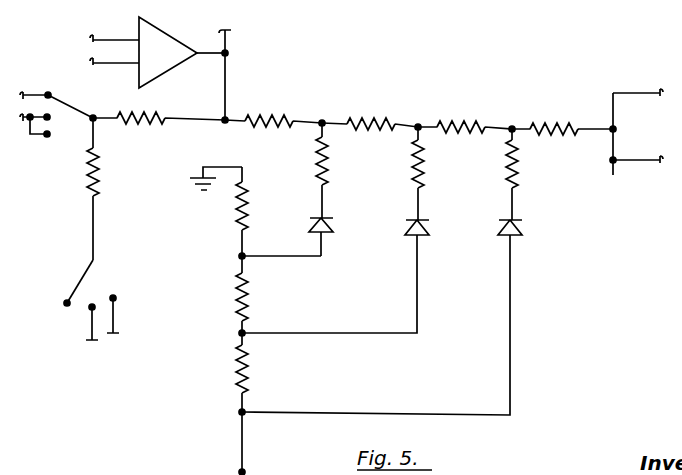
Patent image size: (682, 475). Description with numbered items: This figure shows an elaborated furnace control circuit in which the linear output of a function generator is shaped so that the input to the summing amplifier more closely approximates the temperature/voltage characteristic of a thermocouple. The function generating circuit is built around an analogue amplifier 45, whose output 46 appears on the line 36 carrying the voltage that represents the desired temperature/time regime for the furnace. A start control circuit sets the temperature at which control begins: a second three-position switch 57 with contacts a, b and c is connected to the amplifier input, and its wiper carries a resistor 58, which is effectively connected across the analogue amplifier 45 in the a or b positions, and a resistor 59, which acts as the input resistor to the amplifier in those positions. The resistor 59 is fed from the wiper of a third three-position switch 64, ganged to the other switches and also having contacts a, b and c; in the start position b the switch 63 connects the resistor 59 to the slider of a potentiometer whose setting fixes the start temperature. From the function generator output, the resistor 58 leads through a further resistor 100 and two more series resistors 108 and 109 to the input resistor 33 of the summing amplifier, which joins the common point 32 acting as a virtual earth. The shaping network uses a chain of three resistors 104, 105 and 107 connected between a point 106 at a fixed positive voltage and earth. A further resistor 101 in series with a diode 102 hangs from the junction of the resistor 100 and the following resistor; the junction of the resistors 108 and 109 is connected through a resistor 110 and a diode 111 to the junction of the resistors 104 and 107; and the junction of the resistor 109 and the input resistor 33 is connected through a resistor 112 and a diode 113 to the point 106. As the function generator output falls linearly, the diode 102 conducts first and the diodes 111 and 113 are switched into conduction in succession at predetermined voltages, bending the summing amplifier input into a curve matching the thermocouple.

The analogue amplifier 45 is at (170, 48).
The amplifier output lead 46 is at (208, 60).
The line 36 is at (229, 88).
The second three-position switch 57 is at (80, 131).
The resistor 58 is at (159, 135).
The resistor 59 is at (84, 184).
The third three-position switch 64 is at (74, 276).
The switch 63 is at (88, 311).
The further resistor 100 is at (278, 120).
The resistor 108 is at (367, 122).
The resistor 109 is at (465, 123).
The input resistor 33 is at (545, 122).
The common point 32 is at (610, 162).
The further resistor 101 is at (313, 162).
The diode 102 is at (309, 224).
The resistor 110 is at (410, 155).
The diode 111 is at (405, 228).
The resistor 112 is at (507, 165).
The diode 113 is at (497, 228).
The resistor 105 is at (236, 210).
The resistor 104 is at (236, 286).
The resistor 107 is at (233, 363).
The point 106 is at (240, 472).